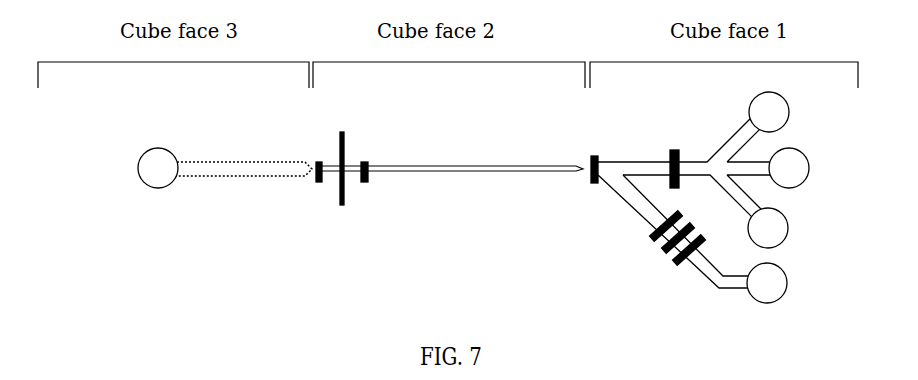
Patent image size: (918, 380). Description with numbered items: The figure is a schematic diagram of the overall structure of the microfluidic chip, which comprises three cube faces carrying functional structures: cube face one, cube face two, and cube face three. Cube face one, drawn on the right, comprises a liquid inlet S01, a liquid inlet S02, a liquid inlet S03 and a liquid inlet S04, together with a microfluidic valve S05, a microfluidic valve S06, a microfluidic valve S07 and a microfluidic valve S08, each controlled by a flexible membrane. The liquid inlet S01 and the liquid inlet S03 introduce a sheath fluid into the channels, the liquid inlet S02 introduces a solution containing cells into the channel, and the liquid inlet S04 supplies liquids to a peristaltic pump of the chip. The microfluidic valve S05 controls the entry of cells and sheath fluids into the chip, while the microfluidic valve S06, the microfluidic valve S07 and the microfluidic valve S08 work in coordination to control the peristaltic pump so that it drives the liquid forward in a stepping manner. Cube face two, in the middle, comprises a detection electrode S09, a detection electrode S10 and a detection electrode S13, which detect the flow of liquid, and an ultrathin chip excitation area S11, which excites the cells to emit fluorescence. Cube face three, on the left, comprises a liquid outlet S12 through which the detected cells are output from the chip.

The liquid inlet S01 is at (791, 112).
The liquid inlet S02 is at (811, 168).
The liquid inlet S03 is at (790, 228).
The liquid inlet S04 is at (790, 283).
The microfluidic valve S05 is at (671, 155).
The microfluidic valve S06 is at (646, 240).
The microfluidic valve S07 is at (662, 254).
The microfluidic valve S08 is at (678, 272).
The detection electrode S09 is at (593, 150).
The detection electrode S10 is at (368, 192).
The ultrathin chip excitation area S11 is at (342, 153).
The liquid outlet S12 is at (138, 168).
The detection electrode S13 is at (316, 192).